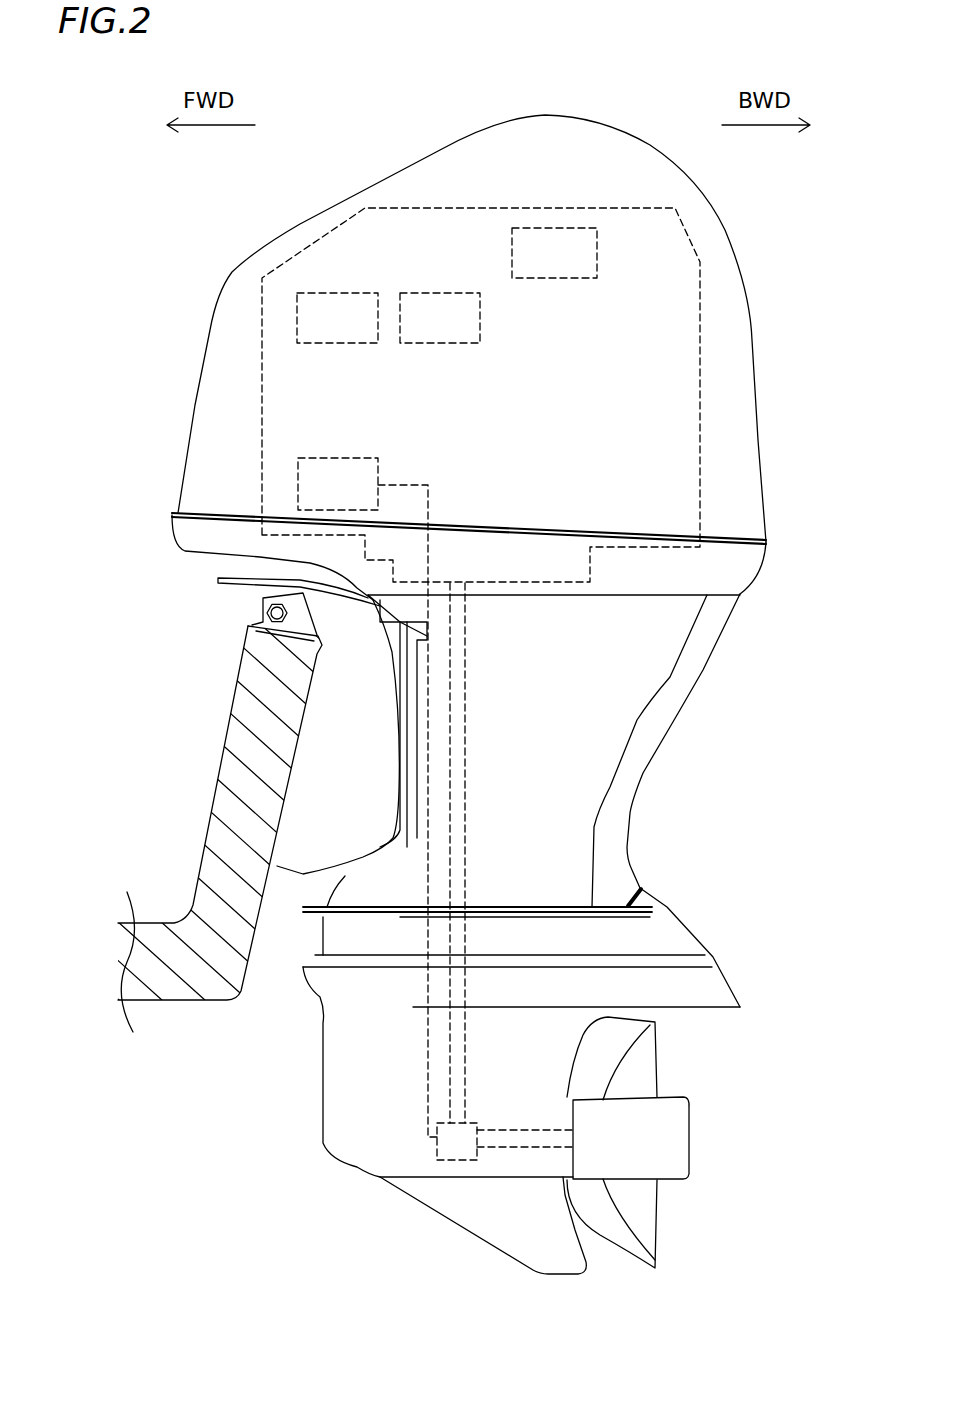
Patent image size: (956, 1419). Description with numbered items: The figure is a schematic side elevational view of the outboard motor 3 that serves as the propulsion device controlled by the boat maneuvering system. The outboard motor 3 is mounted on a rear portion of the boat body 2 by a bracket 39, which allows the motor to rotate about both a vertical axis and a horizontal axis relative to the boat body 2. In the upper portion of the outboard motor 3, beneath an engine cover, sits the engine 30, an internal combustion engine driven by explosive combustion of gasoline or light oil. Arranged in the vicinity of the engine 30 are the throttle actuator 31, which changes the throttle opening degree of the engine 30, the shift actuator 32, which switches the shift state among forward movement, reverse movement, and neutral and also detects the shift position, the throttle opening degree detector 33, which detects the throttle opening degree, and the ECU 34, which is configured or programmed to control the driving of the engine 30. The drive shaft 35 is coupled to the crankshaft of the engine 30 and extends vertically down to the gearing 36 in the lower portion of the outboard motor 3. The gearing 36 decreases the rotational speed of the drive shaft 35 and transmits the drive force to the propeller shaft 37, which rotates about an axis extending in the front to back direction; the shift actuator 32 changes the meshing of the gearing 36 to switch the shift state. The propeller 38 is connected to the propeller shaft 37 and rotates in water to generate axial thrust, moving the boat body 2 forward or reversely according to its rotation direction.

The boat body 2 is at (241, 673).
The outboard motor 3 is at (752, 297).
The engine 30 is at (710, 347).
The throttle actuator 31 is at (342, 293).
The shift actuator 32 is at (348, 458).
The throttle opening degree detector 33 is at (452, 293).
The ECU (engine control unit) 34 is at (571, 228).
The drive shaft 35 is at (457, 811).
The gearing 36 is at (430, 1147).
The propeller shaft 37 is at (497, 1150).
The propeller 38 is at (657, 1074).
The bracket 39 is at (331, 734).